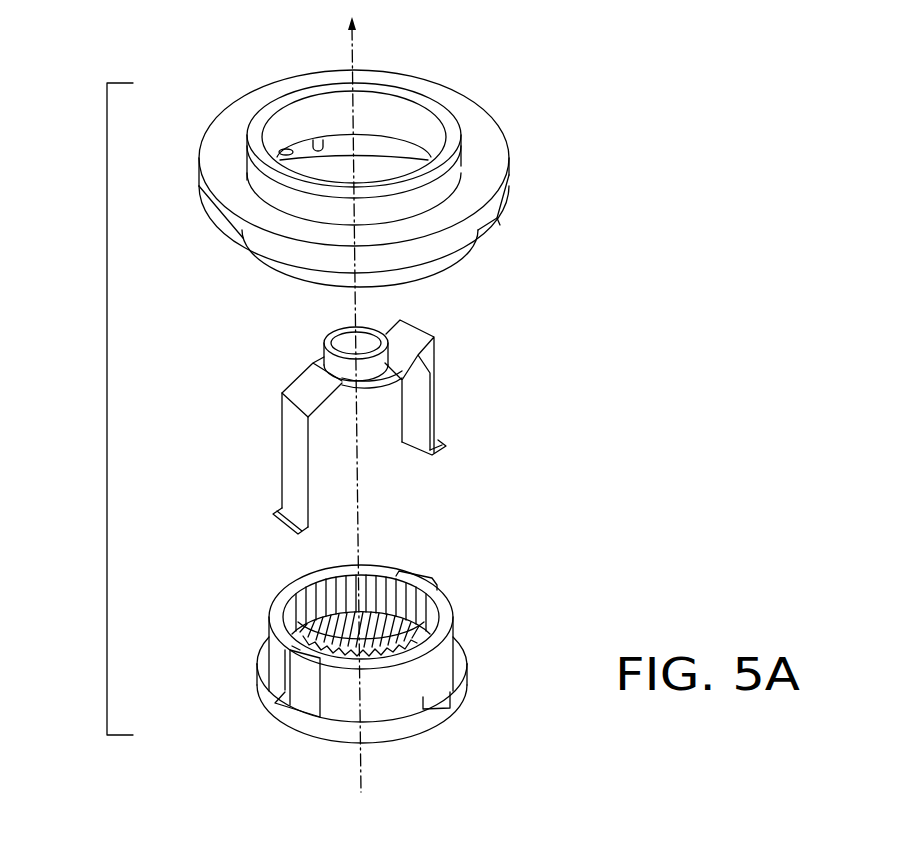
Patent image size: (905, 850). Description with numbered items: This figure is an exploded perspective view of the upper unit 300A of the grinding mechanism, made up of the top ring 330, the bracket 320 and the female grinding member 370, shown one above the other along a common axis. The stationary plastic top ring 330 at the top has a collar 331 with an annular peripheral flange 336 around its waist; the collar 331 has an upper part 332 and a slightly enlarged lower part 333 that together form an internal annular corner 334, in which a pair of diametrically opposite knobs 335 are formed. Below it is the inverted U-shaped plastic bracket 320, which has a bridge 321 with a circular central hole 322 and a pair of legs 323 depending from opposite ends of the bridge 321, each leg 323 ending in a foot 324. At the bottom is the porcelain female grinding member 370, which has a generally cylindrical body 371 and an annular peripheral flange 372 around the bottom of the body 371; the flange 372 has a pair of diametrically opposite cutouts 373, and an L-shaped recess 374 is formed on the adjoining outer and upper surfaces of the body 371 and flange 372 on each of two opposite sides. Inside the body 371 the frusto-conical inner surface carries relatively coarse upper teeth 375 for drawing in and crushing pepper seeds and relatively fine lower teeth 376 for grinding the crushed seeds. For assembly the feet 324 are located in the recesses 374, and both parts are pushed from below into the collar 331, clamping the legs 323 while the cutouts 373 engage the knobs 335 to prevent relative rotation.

The upper unit 300A is at (107, 396).
The top ring 330 is at (472, 161).
The collar 331 is at (456, 172).
The upper part 332 is at (438, 104).
The lower part 333 is at (420, 267).
The internal annular corner 334 is at (313, 140).
The knobs 335 is at (284, 150).
The annular peripheral flange 336 is at (475, 200).
The bracket 320 is at (464, 436).
The bridge 321 is at (298, 383).
The circular central hole 322 is at (355, 347).
The legs 323 is at (292, 464).
The foot 324 is at (281, 530).
The female grinding member 370 is at (443, 681).
The cylindrical body 371 is at (446, 660).
The annular peripheral flange 372 is at (396, 735).
The cutouts 373 is at (437, 705).
The L-shaped recess 374 is at (417, 576).
The upper teeth 375 is at (312, 606).
The lower teeth 376 is at (296, 648).